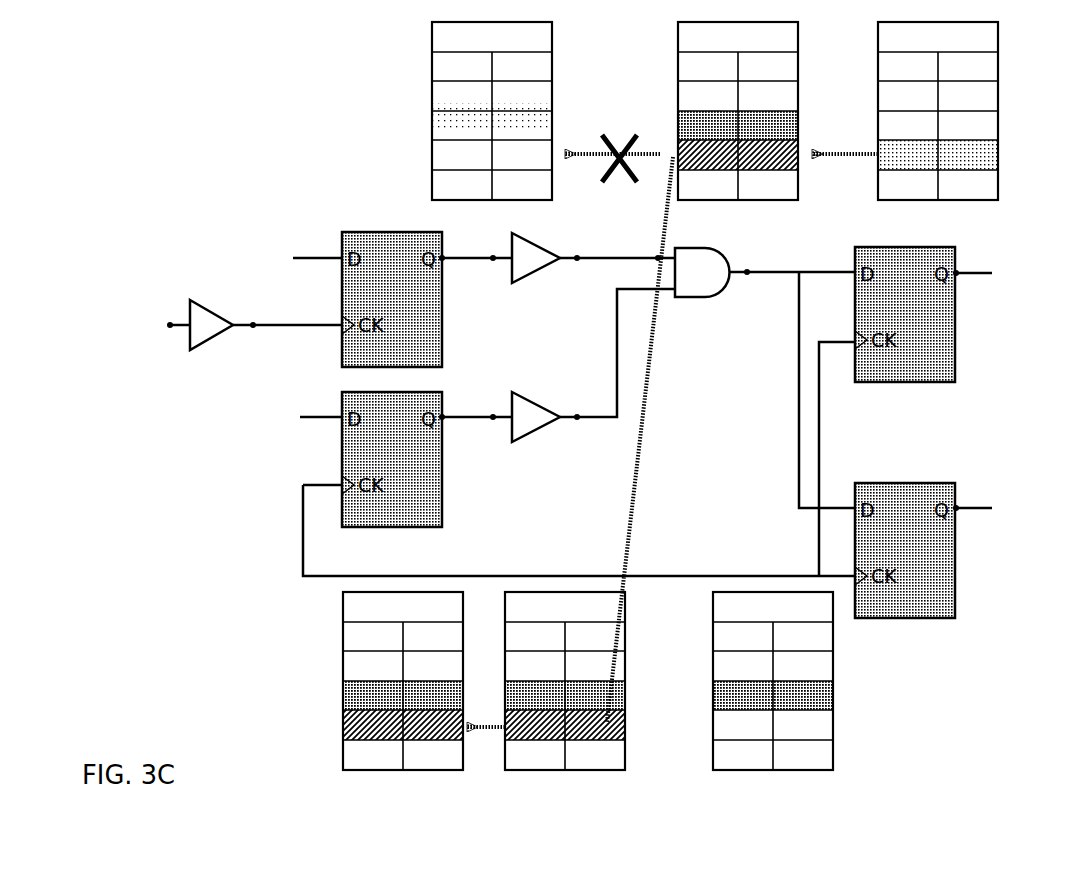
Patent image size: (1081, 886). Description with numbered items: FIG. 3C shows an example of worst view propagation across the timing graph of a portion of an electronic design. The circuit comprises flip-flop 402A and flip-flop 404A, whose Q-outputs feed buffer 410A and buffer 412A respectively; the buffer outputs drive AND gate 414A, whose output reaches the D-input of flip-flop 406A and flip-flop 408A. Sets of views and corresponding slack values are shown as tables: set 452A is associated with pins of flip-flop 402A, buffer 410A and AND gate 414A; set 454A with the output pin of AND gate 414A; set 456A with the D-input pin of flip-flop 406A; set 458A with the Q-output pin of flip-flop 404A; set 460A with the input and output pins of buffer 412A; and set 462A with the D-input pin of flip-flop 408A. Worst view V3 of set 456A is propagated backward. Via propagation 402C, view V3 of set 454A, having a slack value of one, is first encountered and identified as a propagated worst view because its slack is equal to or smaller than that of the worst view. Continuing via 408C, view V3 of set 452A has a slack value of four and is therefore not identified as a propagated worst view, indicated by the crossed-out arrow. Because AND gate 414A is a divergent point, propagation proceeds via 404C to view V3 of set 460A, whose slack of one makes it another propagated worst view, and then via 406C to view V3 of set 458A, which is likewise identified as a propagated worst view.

The flip-flop 402A is at (393, 228).
The flip-flop 404A is at (338, 462).
The flip-flop 406A is at (960, 315).
The flip-flop 408A is at (960, 552).
The buffer 410A is at (537, 240).
The buffer 412A is at (548, 401).
The AND gate 414A is at (703, 300).
The set of views and corresponding slack values 452A is at (492, 111).
The set of views and corresponding slack values 454A is at (738, 111).
The set of views and corresponding slack values 456A is at (938, 111).
The set of views and corresponding slack values 458A is at (403, 681).
The set of views and corresponding slack values 460A is at (565, 681).
The set of views and corresponding slack values 462A is at (773, 681).
The propagation 402C is at (845, 136).
The propagation 404C is at (656, 439).
The propagation 406C is at (492, 735).
The propagation 408C is at (612, 144).